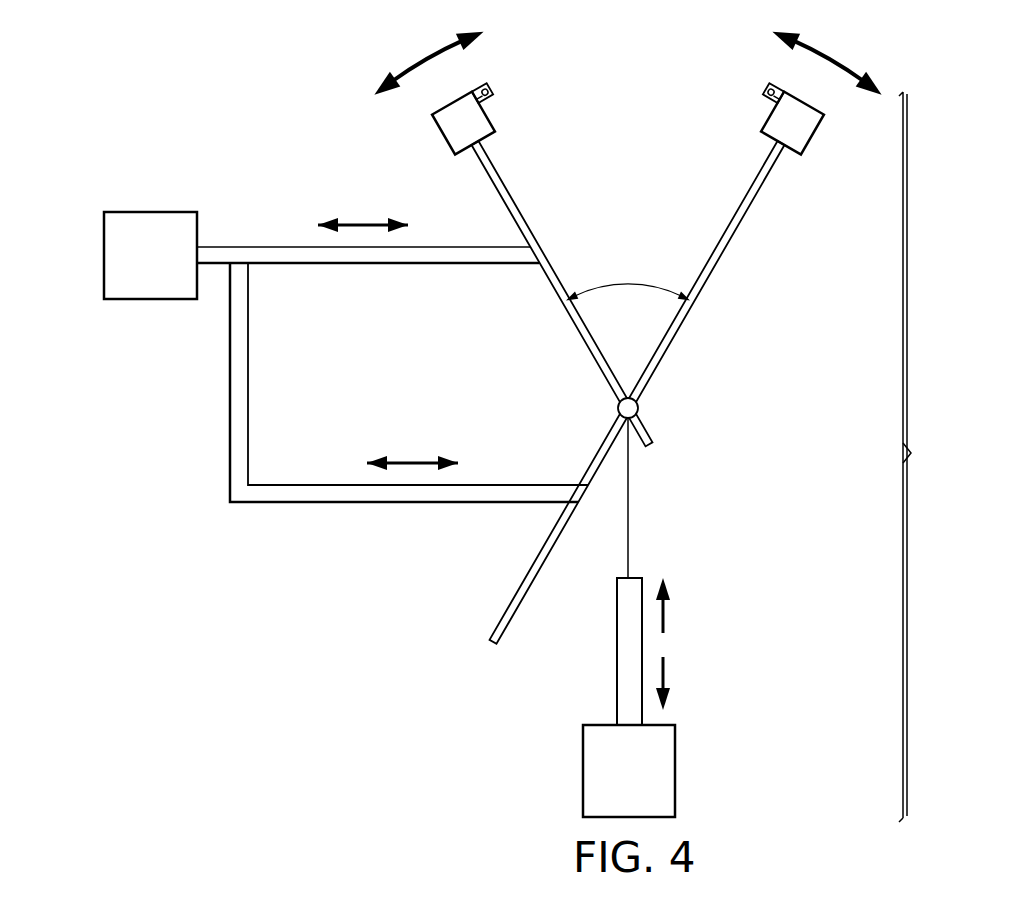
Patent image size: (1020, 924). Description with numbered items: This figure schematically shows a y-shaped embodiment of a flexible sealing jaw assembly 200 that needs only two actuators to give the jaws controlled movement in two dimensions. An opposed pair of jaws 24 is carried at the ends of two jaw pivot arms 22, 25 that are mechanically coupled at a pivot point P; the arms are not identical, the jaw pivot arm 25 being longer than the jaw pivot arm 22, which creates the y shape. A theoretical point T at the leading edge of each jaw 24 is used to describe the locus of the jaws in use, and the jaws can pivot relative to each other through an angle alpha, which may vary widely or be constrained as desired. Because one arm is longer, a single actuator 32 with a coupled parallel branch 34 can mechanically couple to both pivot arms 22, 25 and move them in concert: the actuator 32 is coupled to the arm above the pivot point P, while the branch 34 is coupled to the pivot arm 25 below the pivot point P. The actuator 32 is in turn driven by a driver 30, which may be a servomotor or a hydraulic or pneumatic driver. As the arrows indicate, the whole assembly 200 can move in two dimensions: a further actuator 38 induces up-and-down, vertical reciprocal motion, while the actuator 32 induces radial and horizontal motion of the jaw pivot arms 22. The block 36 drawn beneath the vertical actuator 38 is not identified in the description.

The flexible sealing jaw assembly 200 is at (933, 457).
The driver 30 is at (104, 256).
The actuator 32 is at (368, 264).
The parallel branch 34 is at (400, 504).
The jaw pivot arm 22 is at (550, 286).
The jaw pivot arm 25 is at (714, 274).
The jaw 24 is at (432, 118).
The theoretical point T is at (490, 89).
The angle alpha is at (628, 278).
The pivot point P is at (652, 416).
The actuator 38 is at (617, 648).
The vertical actuator 36 is at (675, 770).